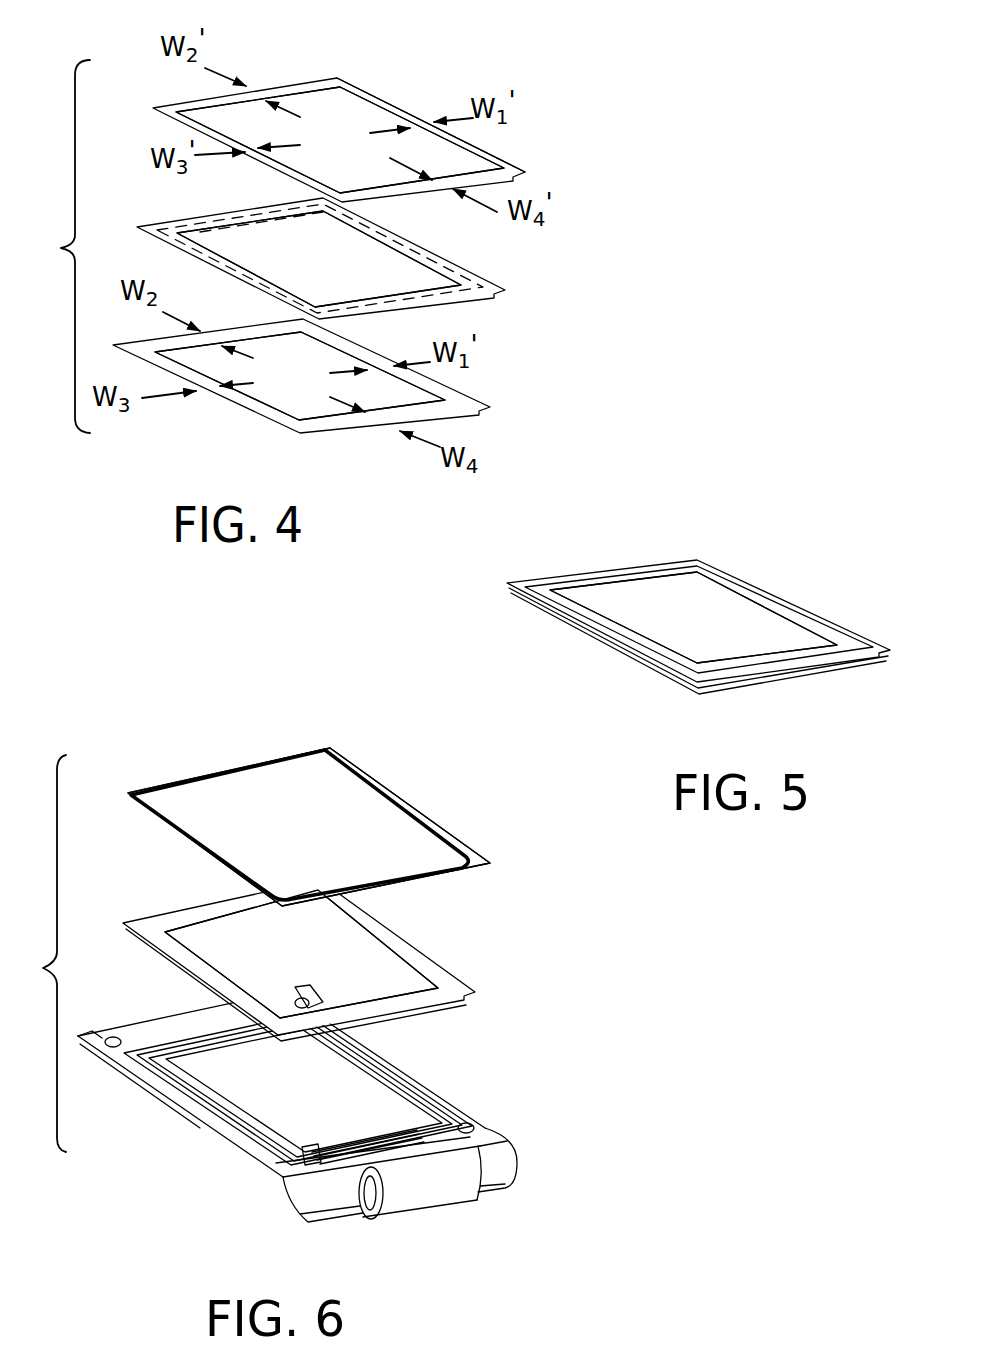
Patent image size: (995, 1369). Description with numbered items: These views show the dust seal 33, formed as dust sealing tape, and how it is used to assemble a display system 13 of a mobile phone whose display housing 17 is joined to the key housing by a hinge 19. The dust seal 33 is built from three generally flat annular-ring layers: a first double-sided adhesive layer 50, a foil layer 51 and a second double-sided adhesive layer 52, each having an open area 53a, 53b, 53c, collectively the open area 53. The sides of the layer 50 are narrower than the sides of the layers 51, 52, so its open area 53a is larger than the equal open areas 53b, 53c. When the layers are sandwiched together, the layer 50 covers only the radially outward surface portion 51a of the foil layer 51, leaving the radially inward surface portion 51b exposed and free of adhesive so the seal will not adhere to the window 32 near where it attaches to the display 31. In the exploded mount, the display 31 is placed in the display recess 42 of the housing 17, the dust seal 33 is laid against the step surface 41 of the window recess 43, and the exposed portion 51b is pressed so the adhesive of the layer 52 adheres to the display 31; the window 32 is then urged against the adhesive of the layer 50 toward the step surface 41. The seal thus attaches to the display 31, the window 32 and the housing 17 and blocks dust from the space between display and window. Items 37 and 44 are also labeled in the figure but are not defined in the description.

In FIG. 6, the display system 13 is at (218, 730).
In FIG. 6, the display housing 17 is at (287, 1212).
In FIG. 6, the hinge 19 is at (372, 1216).
In FIG. 6, the display 31 is at (370, 1092).
In FIG. 6, the window 32 is at (400, 822).
In FIG. 4, the dust seal 33 is at (541, 131).
In FIG. 5, the dust seal 33 is at (670, 562).
In FIG. 6, the dust seal 33 is at (437, 985).
In FIG. 6, the cover stack 37 is at (120, 815).
In FIG. 6, the step surface 41 is at (120, 1065).
In FIG. 6, the display recess 42 is at (232, 1122).
In FIG. 6, the window recess 43 is at (177, 1102).
In FIG. 6, the inner ledge 44 is at (258, 1140).
In FIG. 4, the first double-sided adhesive layer 50 is at (360, 88).
In FIG. 5, the first double-sided adhesive layer 50 is at (745, 580).
In FIG. 4, the foil layer 51 is at (505, 290).
In FIG. 5, the foil layer 51 is at (765, 597).
In FIG. 4, the radially outward surface portion 51a is at (433, 300).
In FIG. 4, the radially inward surface portion 51b is at (400, 290).
In FIG. 4, the second double-sided adhesive layer 52 is at (488, 412).
In FIG. 5, the second double-sided adhesive layer 52 is at (843, 674).
In FIG. 5, the open area 53 is at (622, 590).
In FIG. 6, the open area 53 is at (380, 960).
In FIG. 4, the open area of the first adhesive layer 53a is at (480, 166).
In FIG. 4, the open area of the foil layer 53b is at (445, 275).
In FIG. 4, the open area of the second adhesive layer 53c is at (407, 400).